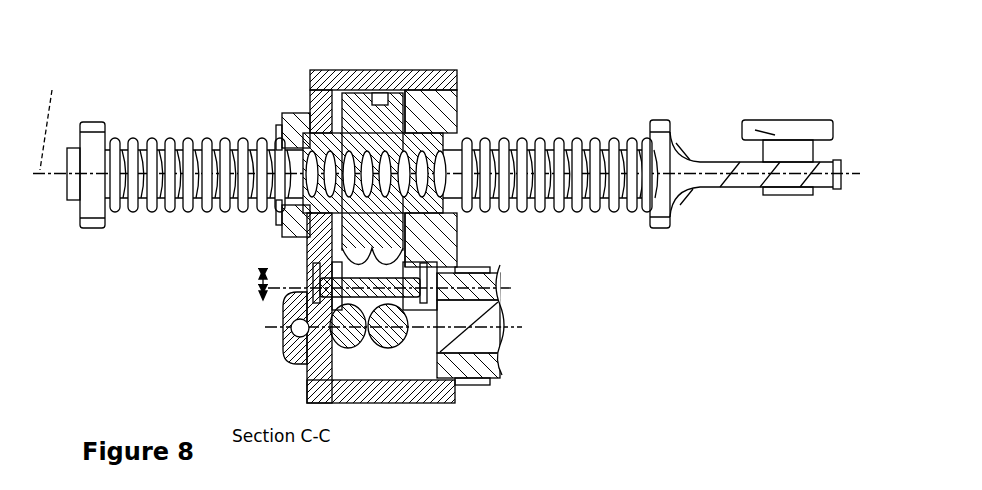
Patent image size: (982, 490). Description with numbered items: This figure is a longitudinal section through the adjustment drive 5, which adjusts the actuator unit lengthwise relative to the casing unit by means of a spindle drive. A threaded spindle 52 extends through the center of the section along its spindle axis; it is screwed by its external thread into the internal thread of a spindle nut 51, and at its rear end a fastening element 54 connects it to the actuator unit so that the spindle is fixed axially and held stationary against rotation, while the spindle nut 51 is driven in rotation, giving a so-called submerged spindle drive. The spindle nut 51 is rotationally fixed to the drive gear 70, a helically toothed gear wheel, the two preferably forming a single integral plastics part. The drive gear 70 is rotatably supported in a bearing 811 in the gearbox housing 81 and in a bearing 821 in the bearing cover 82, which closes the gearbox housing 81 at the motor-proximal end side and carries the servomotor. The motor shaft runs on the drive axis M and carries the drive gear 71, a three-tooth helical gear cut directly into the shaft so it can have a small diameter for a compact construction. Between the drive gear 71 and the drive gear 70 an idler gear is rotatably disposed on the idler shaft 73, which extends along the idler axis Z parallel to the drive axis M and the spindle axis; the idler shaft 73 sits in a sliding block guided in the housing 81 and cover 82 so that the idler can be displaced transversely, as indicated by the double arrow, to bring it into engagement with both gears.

The adjustment drive 5 is at (446, 225).
The spindle nut 51 is at (286, 135).
The threaded spindle 52 is at (572, 138).
The fastening element 54 is at (790, 152).
The drive gear 70 is at (378, 100).
The drive gear 71 is at (405, 358).
The idler shaft 73 is at (365, 355).
The gearbox housing 81 is at (323, 72).
The bearing 811 is at (305, 115).
The bearing cover 82 is at (430, 115).
The bearing 821 is at (458, 108).
The idler axis Z is at (504, 288).
The drive axis M is at (515, 328).